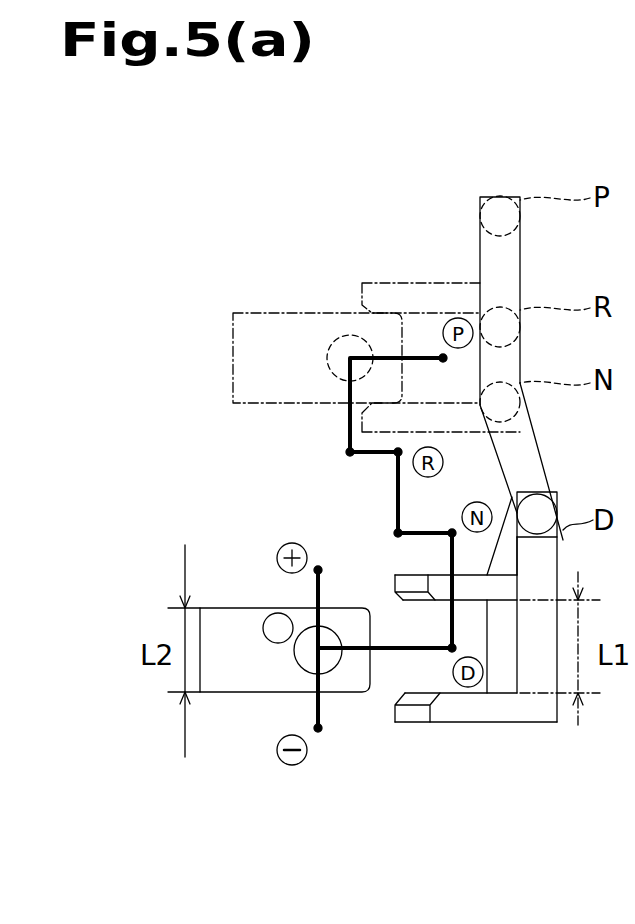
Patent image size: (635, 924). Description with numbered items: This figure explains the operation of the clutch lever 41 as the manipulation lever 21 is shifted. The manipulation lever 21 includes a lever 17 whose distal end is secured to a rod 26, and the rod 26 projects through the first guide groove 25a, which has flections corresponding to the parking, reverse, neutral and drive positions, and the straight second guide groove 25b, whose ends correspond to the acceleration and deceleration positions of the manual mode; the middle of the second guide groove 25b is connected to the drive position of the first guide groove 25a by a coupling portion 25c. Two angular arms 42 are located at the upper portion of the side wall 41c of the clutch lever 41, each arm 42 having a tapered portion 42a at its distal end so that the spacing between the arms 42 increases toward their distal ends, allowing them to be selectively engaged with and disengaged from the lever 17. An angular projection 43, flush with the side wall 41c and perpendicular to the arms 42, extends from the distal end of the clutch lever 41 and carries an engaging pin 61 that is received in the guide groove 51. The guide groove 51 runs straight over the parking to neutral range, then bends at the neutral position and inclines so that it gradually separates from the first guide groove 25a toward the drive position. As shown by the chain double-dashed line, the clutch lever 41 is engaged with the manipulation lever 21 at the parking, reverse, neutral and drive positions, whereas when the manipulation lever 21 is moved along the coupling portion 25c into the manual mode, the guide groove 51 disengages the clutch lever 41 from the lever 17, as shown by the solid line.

The lever 17 is at (301, 492).
The manipulation lever 21 is at (260, 403).
The rod 26 is at (330, 338).
The first guide groove 25a is at (370, 455).
The second guide groove 25b is at (328, 566).
The coupling portion 25c is at (385, 648).
The clutch lever 41 is at (529, 494).
The side wall 41c is at (505, 683).
The arms 42 is at (443, 494).
The tapered portion 42a is at (450, 742).
The projection 43 is at (553, 560).
The guide groove 51 is at (533, 440).
The engaging pin 61 is at (520, 243).